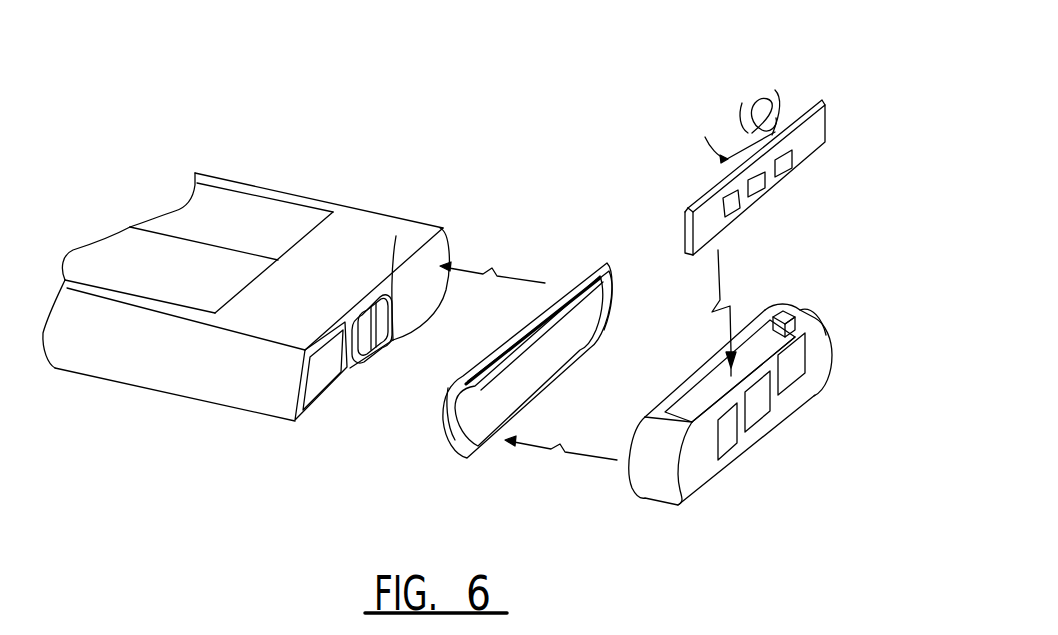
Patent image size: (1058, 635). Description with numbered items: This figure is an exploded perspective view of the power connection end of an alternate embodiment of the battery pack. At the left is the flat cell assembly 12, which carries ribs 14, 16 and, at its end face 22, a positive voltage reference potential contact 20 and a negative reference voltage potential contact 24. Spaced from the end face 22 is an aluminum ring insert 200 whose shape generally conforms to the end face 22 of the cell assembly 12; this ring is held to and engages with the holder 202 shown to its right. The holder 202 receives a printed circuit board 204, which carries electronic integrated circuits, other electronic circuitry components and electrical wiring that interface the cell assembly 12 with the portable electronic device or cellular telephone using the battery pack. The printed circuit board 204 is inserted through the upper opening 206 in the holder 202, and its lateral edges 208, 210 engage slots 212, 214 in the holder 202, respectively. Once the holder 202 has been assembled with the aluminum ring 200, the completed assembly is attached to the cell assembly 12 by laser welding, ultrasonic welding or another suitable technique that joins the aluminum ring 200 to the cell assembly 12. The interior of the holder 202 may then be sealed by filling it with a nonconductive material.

The flat cell assembly 12 is at (232, 203).
The rib 14 is at (162, 378).
The rib 16 is at (318, 198).
The positive voltage reference potential contact 20 is at (382, 292).
The end face 22 is at (434, 299).
The negative reference voltage potential contact 24 is at (320, 375).
The aluminum ring insert 200 is at (589, 262).
The holder 202 is at (640, 475).
The printed circuit board 204 is at (702, 200).
The upper opening 206 is at (778, 320).
The lateral edge 208 is at (664, 221).
The lateral edge 210 is at (838, 103).
The slot 212 is at (695, 412).
The slot 214 is at (797, 316).